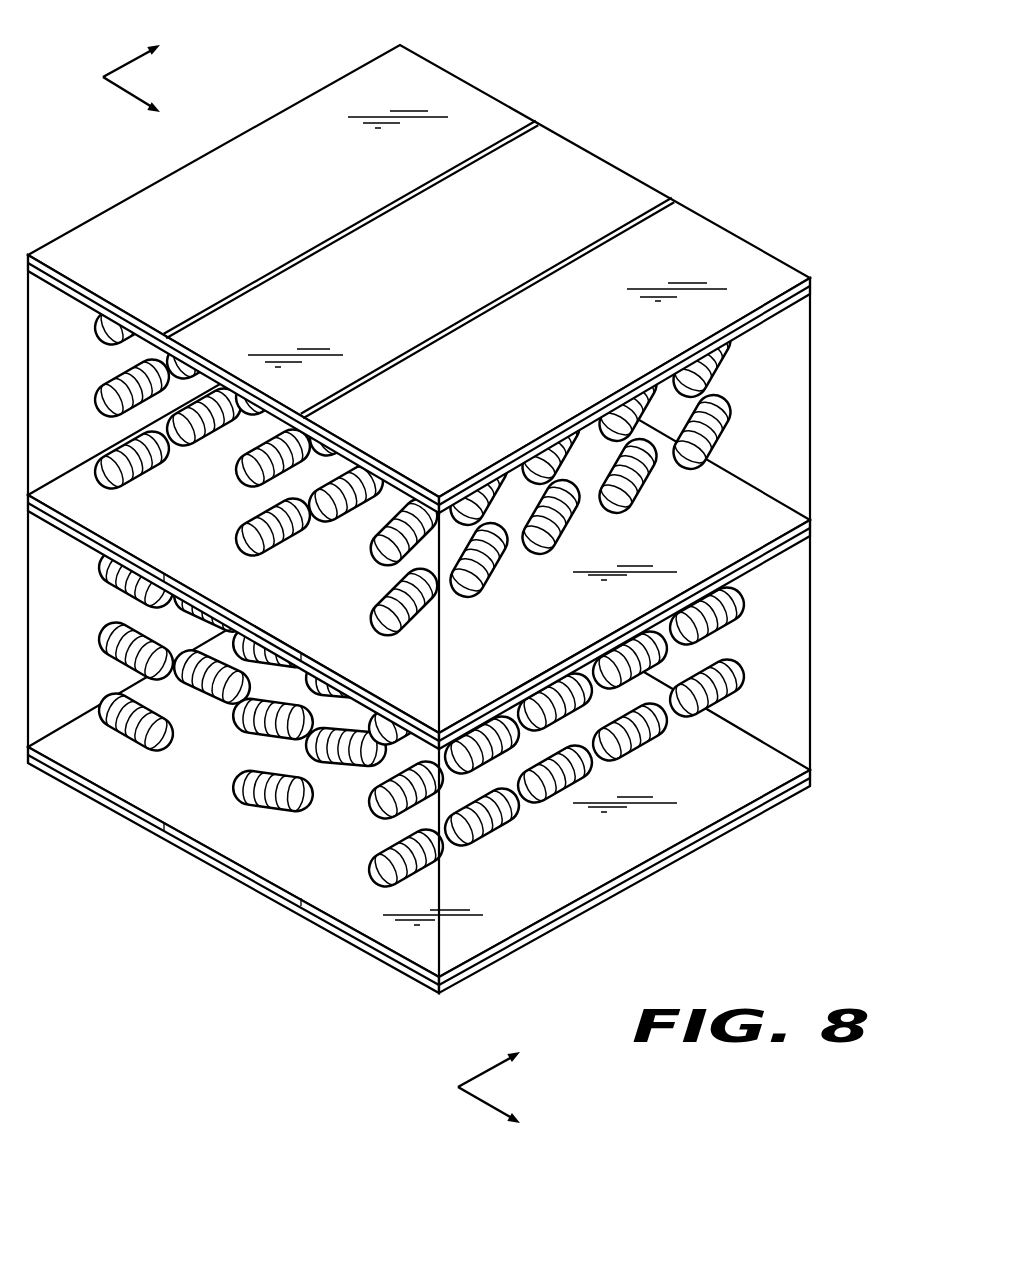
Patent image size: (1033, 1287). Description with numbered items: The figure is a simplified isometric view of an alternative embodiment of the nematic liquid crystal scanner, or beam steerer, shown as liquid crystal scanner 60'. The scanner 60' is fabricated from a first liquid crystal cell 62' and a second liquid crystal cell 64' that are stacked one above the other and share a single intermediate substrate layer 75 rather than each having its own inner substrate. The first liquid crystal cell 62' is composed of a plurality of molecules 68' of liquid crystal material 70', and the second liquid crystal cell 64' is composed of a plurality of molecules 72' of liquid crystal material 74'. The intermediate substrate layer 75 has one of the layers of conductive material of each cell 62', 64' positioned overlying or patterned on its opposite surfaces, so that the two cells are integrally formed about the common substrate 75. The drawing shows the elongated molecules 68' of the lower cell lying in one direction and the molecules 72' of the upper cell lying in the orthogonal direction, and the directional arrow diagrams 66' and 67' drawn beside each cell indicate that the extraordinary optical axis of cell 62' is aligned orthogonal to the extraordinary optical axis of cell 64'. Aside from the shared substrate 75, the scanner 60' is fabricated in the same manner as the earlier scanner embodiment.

The liquid crystal scanner 60' is at (456, 519).
The first liquid crystal cell 62' is at (419, 760).
The second liquid crystal cell 64' is at (419, 279).
The directional arrow diagram 66' is at (498, 1089).
The directional arrow diagram 67' is at (131, 77).
The molecules 68' is at (397, 718).
The liquid crystal material 70' is at (465, 718).
The molecules 72' is at (413, 461).
The liquid crystal material 74' is at (487, 461).
The intermediate substrate layer 75 is at (815, 532).